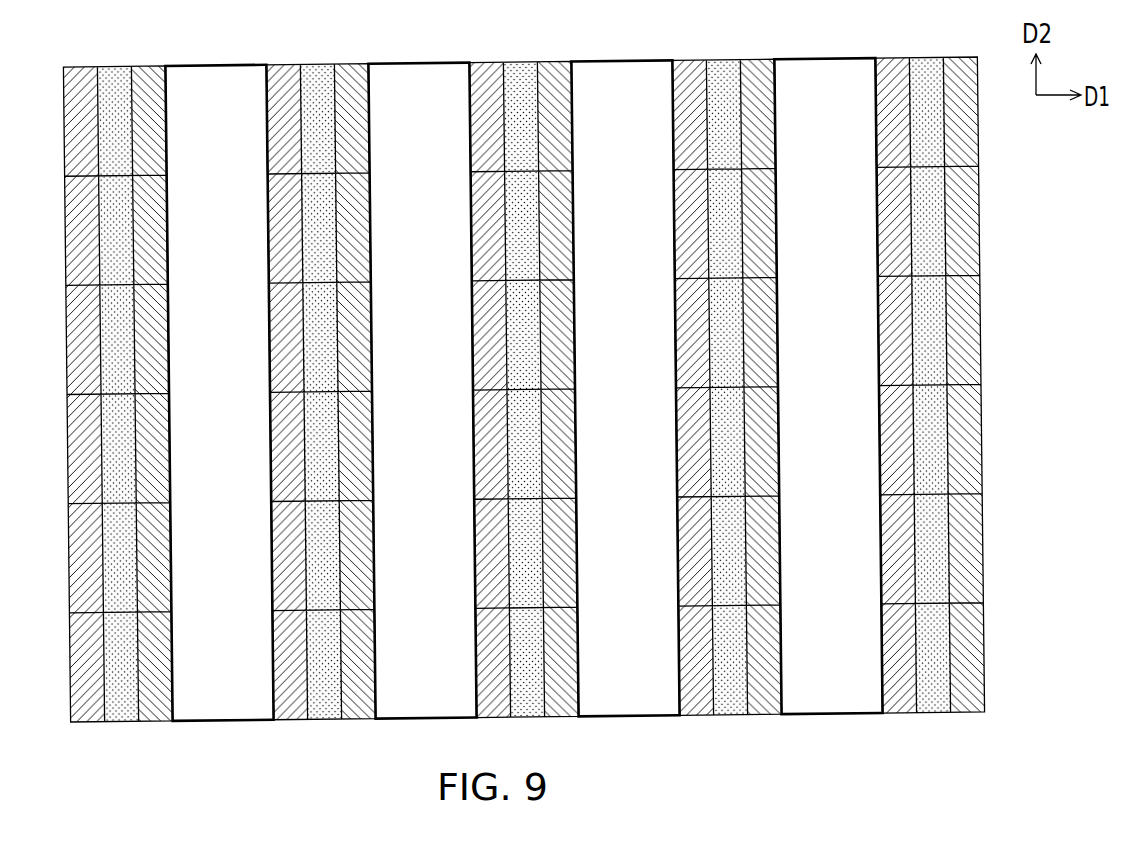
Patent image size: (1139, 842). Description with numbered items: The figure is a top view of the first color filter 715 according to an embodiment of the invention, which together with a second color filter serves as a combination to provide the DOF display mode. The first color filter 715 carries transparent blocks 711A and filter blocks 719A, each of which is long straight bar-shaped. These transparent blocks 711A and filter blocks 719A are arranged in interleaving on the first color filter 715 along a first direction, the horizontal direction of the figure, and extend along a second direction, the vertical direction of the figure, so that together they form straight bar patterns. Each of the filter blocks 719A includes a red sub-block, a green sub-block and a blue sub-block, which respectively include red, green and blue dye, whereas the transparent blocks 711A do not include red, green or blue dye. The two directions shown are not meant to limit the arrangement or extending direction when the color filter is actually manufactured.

The transparent blocks 711A is at (622, 58).
The filter blocks 719A is at (723, 58).
The first color filter 715 is at (560, 385).